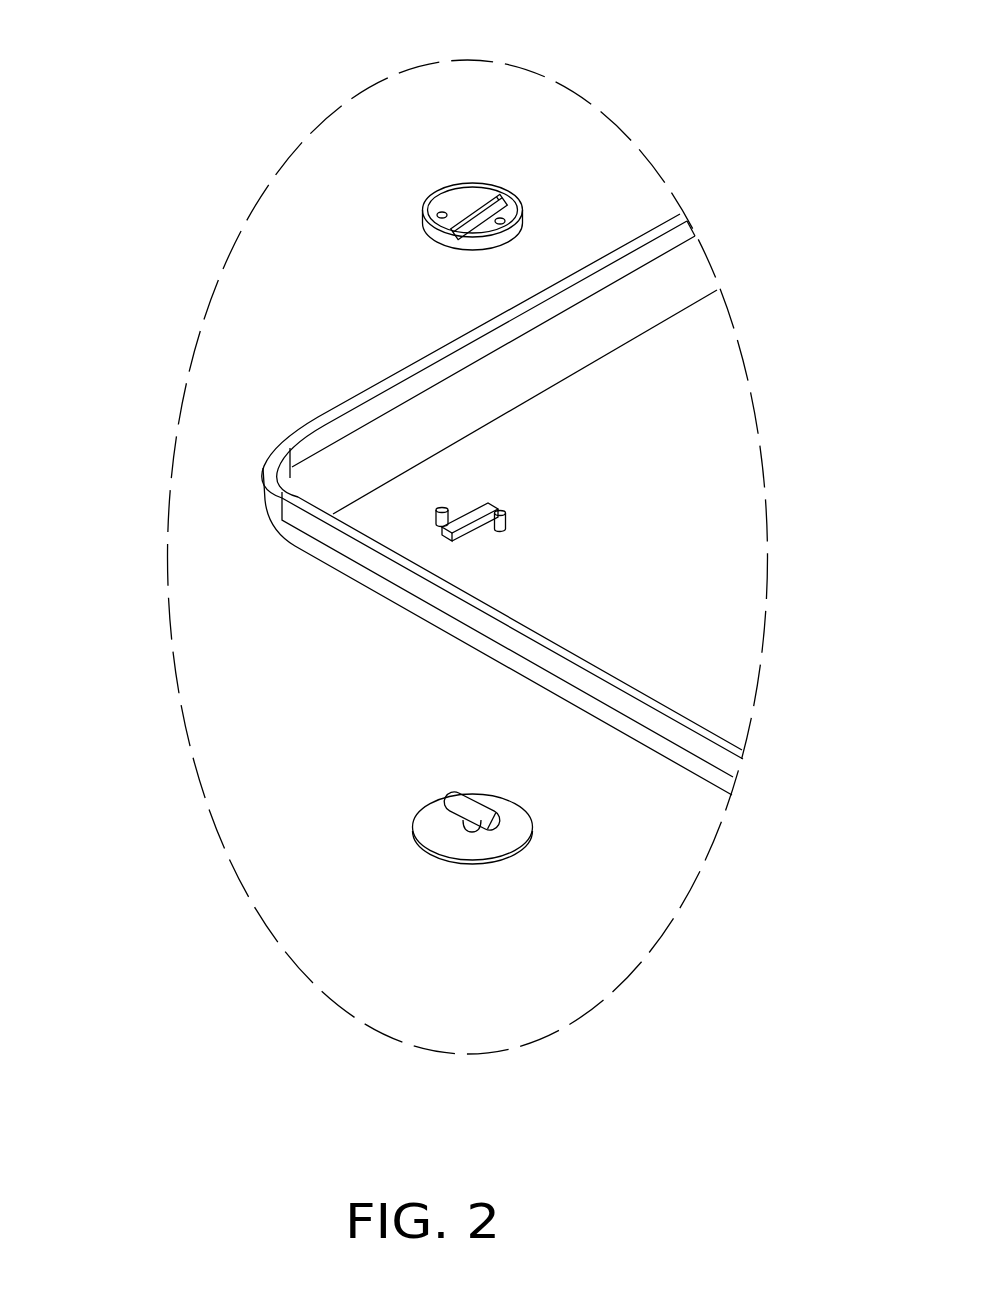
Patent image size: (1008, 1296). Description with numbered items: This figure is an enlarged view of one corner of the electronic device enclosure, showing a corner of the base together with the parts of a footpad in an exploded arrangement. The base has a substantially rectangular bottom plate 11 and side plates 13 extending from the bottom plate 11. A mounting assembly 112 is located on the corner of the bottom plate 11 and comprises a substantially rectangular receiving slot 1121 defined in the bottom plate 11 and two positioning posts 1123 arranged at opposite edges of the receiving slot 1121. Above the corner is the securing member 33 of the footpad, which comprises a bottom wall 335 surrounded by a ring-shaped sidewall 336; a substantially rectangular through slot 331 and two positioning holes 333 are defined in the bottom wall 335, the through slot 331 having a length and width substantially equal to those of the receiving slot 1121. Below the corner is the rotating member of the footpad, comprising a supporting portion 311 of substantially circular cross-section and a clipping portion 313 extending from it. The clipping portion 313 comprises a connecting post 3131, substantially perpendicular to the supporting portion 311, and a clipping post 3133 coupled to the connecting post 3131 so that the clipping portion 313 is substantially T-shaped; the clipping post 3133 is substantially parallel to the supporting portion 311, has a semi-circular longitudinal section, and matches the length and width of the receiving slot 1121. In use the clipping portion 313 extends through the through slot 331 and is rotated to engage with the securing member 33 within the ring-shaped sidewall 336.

The bottom plate 11 is at (370, 508).
The side plate 13 is at (370, 443).
The mounting assembly 112 is at (259, 579).
The receiving slot 1121 is at (453, 538).
The positioning post 1123 is at (437, 525).
The securing member 33 is at (445, 132).
The through slot 331 is at (475, 207).
The positioning hole 333 is at (517, 205).
The bottom wall 335 is at (445, 203).
The ring-shaped sidewall 336 is at (490, 184).
The supporting portion 311 is at (507, 840).
The clipping portion 313 is at (295, 879).
The connecting post 3131 is at (470, 830).
The clipping post 3133 is at (447, 810).